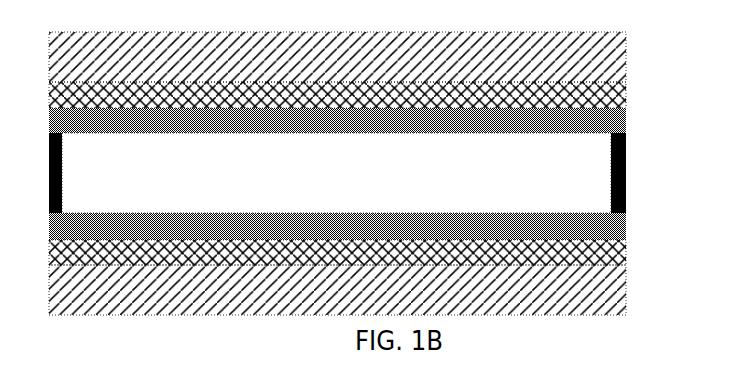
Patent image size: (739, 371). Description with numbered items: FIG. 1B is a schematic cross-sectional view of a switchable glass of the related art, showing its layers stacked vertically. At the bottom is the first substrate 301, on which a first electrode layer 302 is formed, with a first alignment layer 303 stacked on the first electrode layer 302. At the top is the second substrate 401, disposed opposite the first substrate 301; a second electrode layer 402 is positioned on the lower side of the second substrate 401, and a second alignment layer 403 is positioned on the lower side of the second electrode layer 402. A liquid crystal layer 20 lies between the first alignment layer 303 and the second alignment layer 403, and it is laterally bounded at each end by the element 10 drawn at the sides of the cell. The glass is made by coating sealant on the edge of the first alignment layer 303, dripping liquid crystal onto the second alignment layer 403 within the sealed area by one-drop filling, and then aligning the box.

The second substrate 401 is at (613, 68).
The second electrode layer 402 is at (617, 87).
The second alignment layer 403 is at (622, 115).
The liquid crystal layer 20 is at (600, 176).
The electrode 10 is at (626, 188).
The first alignment layer 303 is at (622, 233).
The first electrode layer 302 is at (624, 257).
The first substrate 301 is at (625, 290).